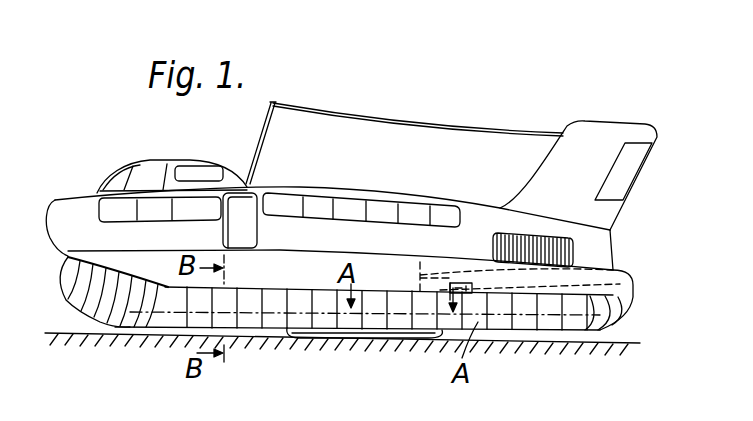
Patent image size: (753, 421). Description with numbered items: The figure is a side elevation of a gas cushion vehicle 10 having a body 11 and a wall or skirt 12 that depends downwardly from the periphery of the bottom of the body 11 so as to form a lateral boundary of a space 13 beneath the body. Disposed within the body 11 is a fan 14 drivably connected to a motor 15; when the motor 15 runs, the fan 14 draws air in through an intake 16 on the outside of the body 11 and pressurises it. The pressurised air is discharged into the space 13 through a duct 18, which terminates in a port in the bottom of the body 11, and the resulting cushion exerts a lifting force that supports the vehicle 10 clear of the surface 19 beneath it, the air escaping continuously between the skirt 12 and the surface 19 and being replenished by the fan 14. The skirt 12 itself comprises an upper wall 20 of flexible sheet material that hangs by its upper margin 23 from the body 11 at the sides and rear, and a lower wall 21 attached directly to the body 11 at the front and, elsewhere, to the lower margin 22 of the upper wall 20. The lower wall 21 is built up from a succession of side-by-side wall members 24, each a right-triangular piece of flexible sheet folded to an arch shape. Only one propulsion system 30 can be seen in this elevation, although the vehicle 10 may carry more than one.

The vehicle 10 is at (195, 159).
The body 11 is at (80, 207).
The skirt 12 is at (91, 307).
The space 13 is at (567, 335).
The fan 14 is at (437, 282).
The motor 15 is at (614, 270).
The intake 16 is at (552, 255).
The duct 18 is at (432, 300).
The surface 19 is at (627, 344).
The upper wall 20 is at (168, 288).
The lower wall 21 is at (102, 313).
The lower margin 22 is at (240, 300).
The upper margin 23 is at (68, 258).
The wall member 24 is at (178, 300).
The propulsion system 30 is at (346, 345).